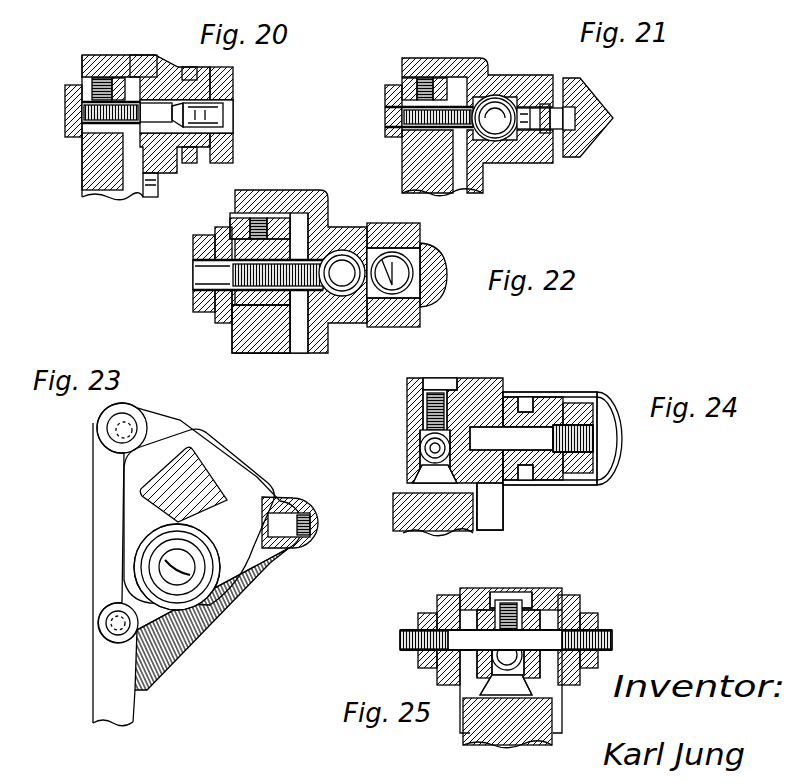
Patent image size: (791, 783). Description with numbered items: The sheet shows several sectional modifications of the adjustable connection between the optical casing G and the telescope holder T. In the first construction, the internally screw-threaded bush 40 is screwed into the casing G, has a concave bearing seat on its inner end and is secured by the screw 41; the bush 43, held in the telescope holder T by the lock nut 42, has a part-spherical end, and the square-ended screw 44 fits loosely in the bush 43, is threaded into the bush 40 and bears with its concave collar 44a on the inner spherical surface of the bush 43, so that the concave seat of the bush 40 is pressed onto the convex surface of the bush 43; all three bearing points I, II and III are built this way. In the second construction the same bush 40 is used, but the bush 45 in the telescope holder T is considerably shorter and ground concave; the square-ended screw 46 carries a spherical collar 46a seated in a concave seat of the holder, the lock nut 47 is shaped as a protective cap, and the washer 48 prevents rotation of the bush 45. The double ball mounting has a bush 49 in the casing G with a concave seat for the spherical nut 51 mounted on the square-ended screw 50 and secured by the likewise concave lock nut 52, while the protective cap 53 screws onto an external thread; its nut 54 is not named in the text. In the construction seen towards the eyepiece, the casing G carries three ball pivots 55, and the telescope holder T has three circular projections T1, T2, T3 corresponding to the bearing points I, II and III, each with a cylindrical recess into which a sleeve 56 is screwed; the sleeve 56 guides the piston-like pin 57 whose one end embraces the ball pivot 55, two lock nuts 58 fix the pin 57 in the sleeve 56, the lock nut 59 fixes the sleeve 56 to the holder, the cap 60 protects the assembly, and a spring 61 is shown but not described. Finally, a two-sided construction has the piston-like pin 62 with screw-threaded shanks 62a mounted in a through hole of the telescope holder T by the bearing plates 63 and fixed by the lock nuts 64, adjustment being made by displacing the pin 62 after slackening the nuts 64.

In FIG. 20, the internally screw-threaded bush 40 is at (65, 90).
In FIG. 21, the internally screw-threaded bush 40 is at (385, 92).
In FIG. 20, the screw 41 is at (109, 63).
In FIG. 20, the lock nut 42 is at (187, 67).
In FIG. 20, the bush 43 is at (140, 57).
In FIG. 20, the square-ended screw 44 is at (217, 112).
In FIG. 20, the concave collar 44a is at (158, 177).
In FIG. 21, the bush 45 is at (513, 93).
In FIG. 21, the square-ended screw 46 is at (588, 150).
In FIG. 21, the spherical collar 46a is at (495, 130).
In FIG. 21, the lock nut 47 is at (613, 118).
In FIG. 21, the washer 48 is at (545, 133).
In FIG. 22, the bush 49 is at (215, 317).
In FIG. 22, the square-ended screw 50 is at (400, 262).
In FIG. 22, the spherical nut 51 is at (258, 300).
In FIG. 22, the lock nut 52 is at (193, 243).
In FIG. 22, the protective cap 53 is at (447, 270).
In FIG. 22, the nut 54 is at (395, 245).
In FIG. 23, the ball pivot 55 is at (118, 436).
In FIG. 24, the ball pivot 55 is at (420, 442).
In FIG. 24, the sleeve 56 is at (553, 392).
In FIG. 24, the piston-like pin 57 is at (407, 407).
In FIG. 24, the lock nuts 58 is at (585, 473).
In FIG. 24, the lock nut 59 is at (522, 485).
In FIG. 24, the cap 60 is at (620, 455).
In FIG. 24, the spring 61 is at (437, 393).
In FIG. 25, the piston-like pin 62 is at (503, 600).
In FIG. 25, the screw-threaded shanks 62a is at (400, 635).
In FIG. 25, the bearing plates 63 is at (447, 595).
In FIG. 25, the lock nuts 64 is at (428, 613).
In FIG. 20, the telescope holder T is at (130, 190).
In FIG. 21, the telescope holder T is at (455, 58).
In FIG. 22, the telescope holder T is at (278, 190).
In FIG. 23, the telescope holder T is at (93, 700).
In FIG. 24, the telescope holder T is at (493, 378).
In FIG. 25, the telescope holder T is at (553, 588).
In FIG. 20, the casing G is at (85, 157).
In FIG. 21, the casing G is at (405, 160).
In FIG. 22, the casing G is at (232, 333).
In FIG. 23, the casing G is at (205, 455).
In FIG. 24, the casing G is at (393, 500).
In FIG. 25, the casing G is at (477, 727).
In FIG. 23, the circular projection T1 is at (315, 540).
In FIG. 23, the circular projection T2 is at (128, 405).
In FIG. 23, the circular projection T3 is at (99, 637).
In FIG. 23, the bearing point I is at (297, 496).
In FIG. 23, the bearing point II is at (98, 425).
In FIG. 23, the bearing point III is at (100, 628).